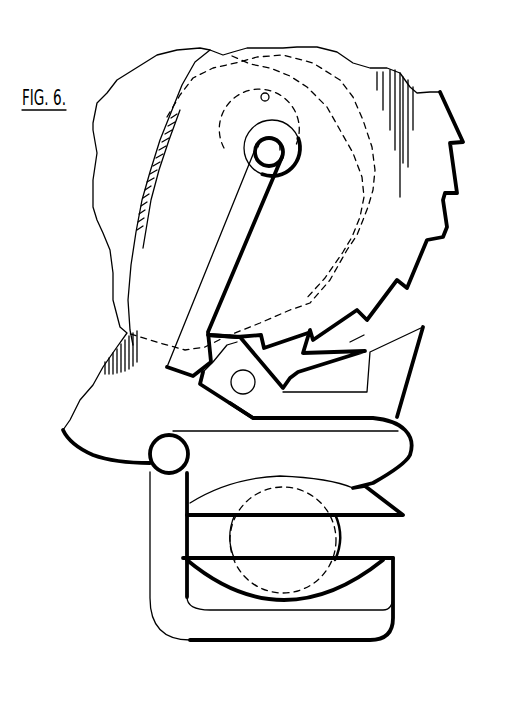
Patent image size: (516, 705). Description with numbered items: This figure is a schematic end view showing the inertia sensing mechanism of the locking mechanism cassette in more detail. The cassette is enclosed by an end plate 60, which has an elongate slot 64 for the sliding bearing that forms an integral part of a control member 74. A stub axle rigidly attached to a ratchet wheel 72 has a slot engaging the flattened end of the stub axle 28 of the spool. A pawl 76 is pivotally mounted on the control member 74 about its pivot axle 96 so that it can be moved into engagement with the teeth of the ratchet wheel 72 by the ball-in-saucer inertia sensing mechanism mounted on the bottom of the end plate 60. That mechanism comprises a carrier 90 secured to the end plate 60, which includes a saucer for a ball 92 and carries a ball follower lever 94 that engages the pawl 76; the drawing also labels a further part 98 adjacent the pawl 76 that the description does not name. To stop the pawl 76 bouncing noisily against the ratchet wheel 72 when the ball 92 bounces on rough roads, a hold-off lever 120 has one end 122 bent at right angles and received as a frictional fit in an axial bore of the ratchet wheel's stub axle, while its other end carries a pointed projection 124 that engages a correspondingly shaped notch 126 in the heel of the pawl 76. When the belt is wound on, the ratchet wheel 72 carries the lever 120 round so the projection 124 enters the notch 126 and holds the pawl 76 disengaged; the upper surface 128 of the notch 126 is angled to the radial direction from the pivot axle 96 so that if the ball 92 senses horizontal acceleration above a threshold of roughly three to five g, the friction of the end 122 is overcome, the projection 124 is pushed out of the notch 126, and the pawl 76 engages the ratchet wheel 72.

The end plate 60 is at (251, 238).
The elongate slot 64 is at (268, 93).
The stub axle 28 is at (248, 152).
The end of hold-off lever 122 is at (300, 165).
The hold-off lever 120 is at (237, 236).
The upper surface of notch 128 is at (228, 331).
The ratchet wheel 72 is at (443, 228).
The stop 98 is at (352, 345).
The pawl 76 is at (403, 356).
The pointed projection 124 is at (203, 373).
The notch 126 is at (212, 338).
The pivot axle 96 is at (243, 382).
The ball follower lever 94 is at (405, 440).
The control member 74 is at (118, 445).
The carrier 90 is at (157, 527).
The ball 92 is at (322, 538).